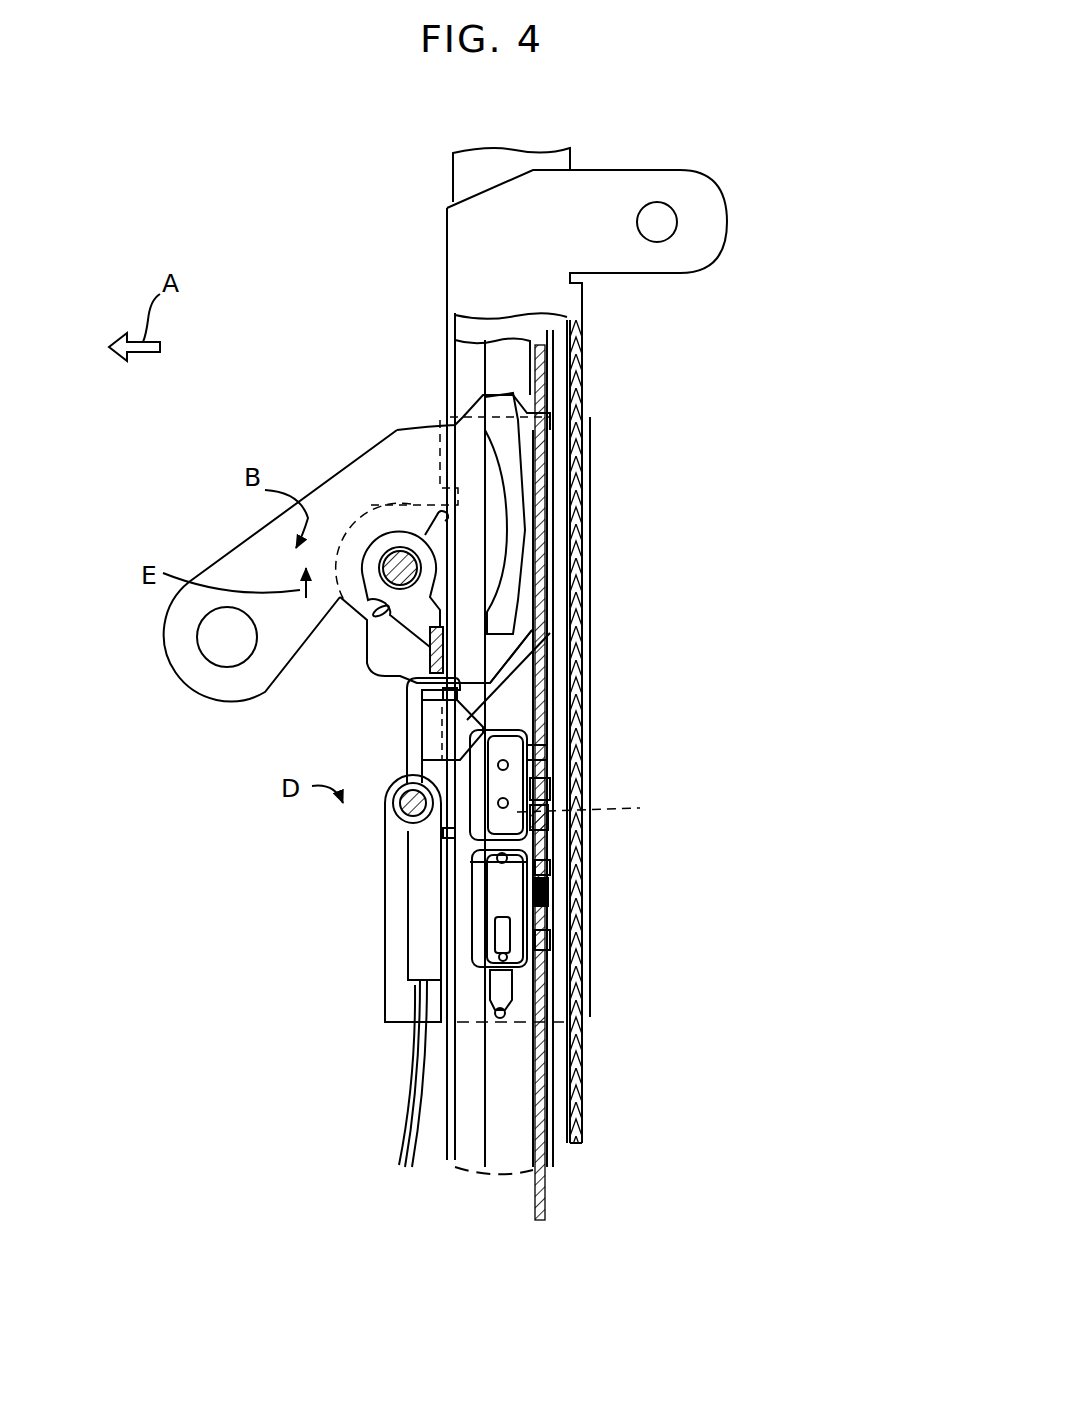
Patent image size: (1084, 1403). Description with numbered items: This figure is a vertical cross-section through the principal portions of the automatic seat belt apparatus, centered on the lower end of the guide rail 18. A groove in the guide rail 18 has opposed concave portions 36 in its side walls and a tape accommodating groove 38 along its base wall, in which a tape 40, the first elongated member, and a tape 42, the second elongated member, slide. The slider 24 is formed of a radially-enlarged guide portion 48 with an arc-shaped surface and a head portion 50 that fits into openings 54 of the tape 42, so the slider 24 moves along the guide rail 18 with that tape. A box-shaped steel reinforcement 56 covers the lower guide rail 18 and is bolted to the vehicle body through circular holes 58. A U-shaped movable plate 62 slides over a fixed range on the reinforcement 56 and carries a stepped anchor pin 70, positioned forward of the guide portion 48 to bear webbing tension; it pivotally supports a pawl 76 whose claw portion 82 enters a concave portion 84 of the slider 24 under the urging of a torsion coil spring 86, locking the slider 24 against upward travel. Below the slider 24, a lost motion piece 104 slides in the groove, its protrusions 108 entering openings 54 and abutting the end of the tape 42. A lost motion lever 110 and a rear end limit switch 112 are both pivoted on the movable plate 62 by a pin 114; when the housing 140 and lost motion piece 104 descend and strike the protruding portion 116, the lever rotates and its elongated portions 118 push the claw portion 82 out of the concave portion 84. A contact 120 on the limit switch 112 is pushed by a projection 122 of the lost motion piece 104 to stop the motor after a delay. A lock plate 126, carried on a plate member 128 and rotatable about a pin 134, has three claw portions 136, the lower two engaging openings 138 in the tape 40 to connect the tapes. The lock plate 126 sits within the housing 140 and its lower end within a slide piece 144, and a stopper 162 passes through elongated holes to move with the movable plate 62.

The guide rail 18 is at (449, 165).
The slider 24 is at (213, 547).
The concave portions 36 is at (543, 712).
The tape accommodating groove 38 is at (555, 366).
The tape 40 is at (560, 893).
The tape 42 is at (543, 723).
The radially-enlarged guide portion 48 is at (510, 456).
The head portion 50 is at (560, 410).
The openings 54 is at (548, 746).
The reinforcement 56 is at (697, 166).
The circular holes 58 is at (668, 228).
The movable plate 62 is at (600, 513).
The stepped anchor pin 70 is at (360, 532).
The pawl 76 is at (392, 528).
The claw portion 82 is at (425, 630).
The concave portion 84 is at (434, 630).
The torsion coil spring 86 is at (426, 536).
The lost motion piece 104 is at (562, 790).
The protrusions 108 is at (535, 760).
The lost motion lever 110 is at (402, 757).
The rear end limit switch 112 is at (400, 880).
The pin 114 is at (405, 799).
The protruding portion 116 is at (517, 707).
The elongated portions 118 is at (404, 680).
The contact 120 is at (432, 845).
The projection 122 is at (443, 837).
The lock plate 126 is at (553, 910).
The plate member 128 is at (605, 807).
The pin 134 is at (472, 862).
The claw portions 136 is at (552, 870).
The openings 138 is at (547, 950).
The housing 140 is at (478, 930).
The slide piece 144 is at (478, 987).
The stopper 162 is at (505, 1018).